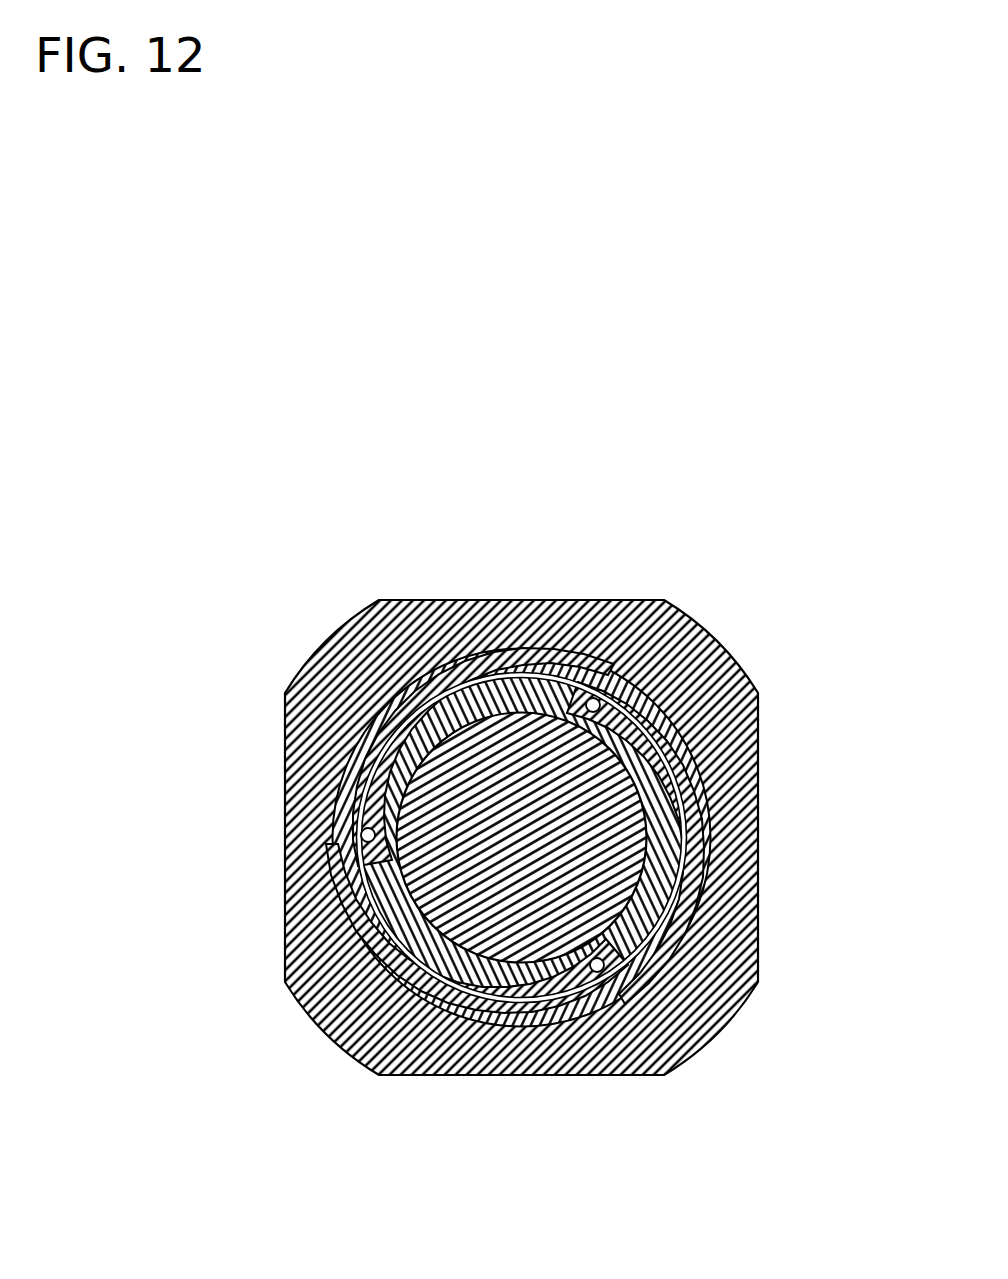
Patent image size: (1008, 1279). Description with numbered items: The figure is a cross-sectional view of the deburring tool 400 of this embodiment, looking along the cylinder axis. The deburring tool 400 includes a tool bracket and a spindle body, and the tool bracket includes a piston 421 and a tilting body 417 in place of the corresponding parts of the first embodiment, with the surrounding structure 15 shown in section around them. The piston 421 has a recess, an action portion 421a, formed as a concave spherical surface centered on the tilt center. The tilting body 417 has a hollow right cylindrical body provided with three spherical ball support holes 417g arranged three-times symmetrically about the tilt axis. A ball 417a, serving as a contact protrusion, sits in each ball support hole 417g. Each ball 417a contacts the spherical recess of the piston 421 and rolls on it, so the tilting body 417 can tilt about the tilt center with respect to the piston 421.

The deburring tool 400 is at (880, 427).
The housing 15 is at (296, 708).
The piston 421 is at (609, 837).
The outer peripheral surface of holding ring 421a is at (730, 815).
The tilting body 417 is at (362, 908).
The ball 417a is at (519, 827).
The ball support hole 417g is at (340, 828).